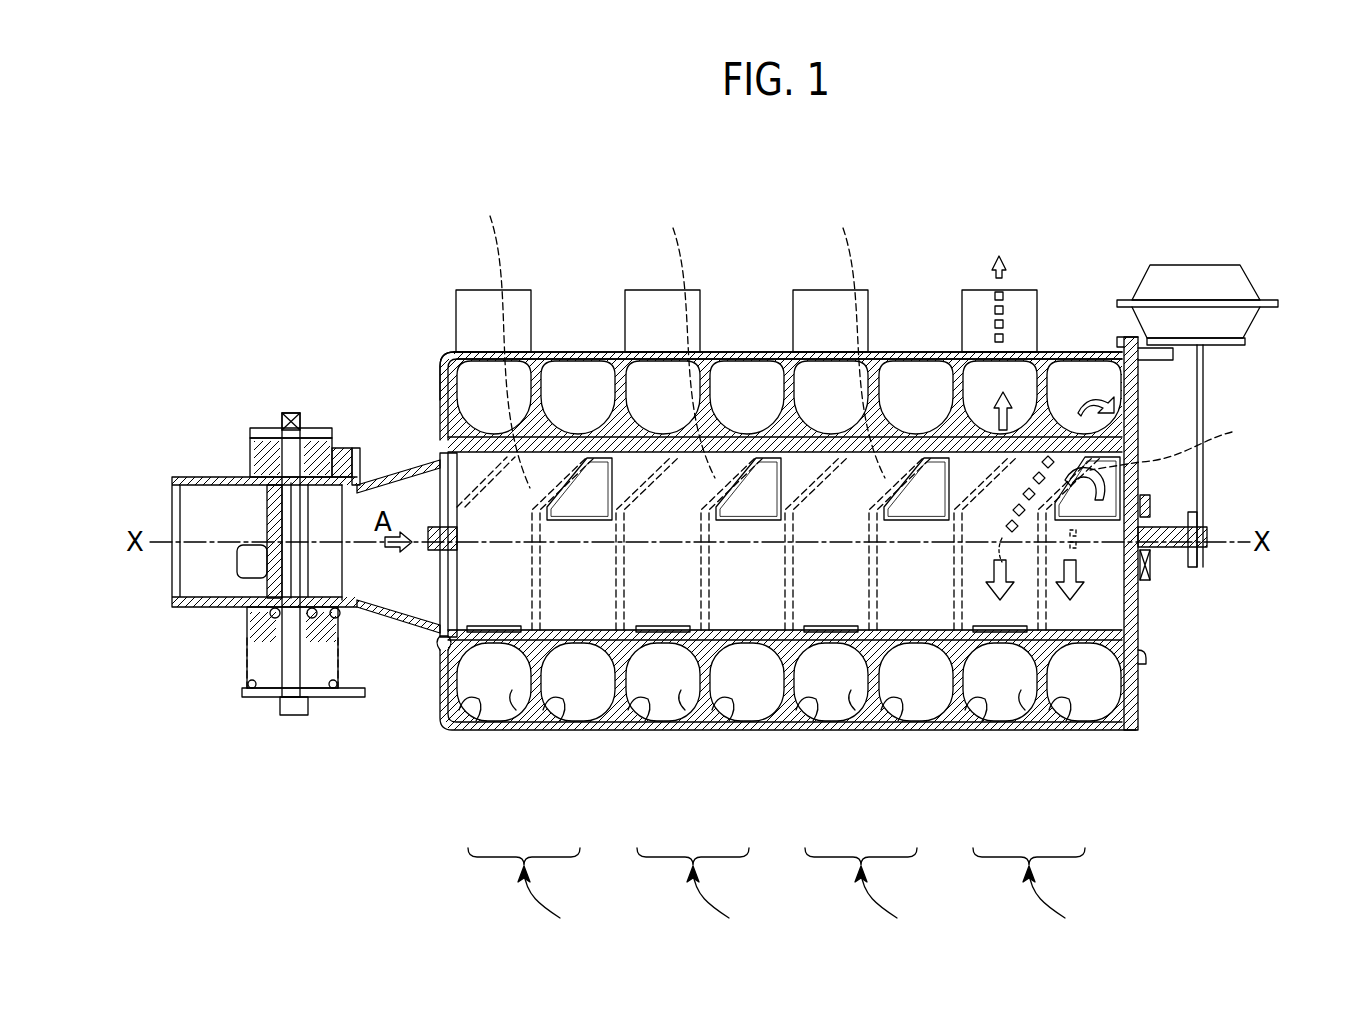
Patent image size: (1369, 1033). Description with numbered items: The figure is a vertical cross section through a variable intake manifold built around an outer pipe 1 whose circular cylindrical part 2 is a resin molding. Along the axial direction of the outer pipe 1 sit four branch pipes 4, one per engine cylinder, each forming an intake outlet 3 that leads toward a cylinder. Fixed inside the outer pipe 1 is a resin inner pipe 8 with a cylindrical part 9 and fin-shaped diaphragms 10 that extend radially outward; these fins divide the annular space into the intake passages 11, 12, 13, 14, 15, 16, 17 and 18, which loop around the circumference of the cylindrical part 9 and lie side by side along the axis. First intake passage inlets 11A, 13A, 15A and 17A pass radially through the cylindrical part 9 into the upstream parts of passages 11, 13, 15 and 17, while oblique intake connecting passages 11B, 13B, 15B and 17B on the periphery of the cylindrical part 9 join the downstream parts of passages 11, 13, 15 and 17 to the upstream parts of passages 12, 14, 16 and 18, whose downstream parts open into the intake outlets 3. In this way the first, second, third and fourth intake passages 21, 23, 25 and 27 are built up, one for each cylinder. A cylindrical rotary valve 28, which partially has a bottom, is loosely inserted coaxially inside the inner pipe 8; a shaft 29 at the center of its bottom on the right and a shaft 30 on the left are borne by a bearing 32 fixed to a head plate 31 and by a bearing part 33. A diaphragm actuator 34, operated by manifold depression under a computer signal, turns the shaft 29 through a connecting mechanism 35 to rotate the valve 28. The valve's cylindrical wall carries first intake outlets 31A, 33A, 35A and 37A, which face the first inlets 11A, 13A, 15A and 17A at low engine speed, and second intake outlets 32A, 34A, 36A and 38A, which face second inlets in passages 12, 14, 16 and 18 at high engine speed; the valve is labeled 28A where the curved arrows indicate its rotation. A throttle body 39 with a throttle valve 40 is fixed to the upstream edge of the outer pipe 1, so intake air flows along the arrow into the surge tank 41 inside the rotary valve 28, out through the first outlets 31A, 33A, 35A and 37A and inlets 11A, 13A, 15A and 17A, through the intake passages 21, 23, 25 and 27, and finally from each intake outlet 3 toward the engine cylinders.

The outer pipe 1 is at (437, 358).
The circular cylindrical part 2 is at (541, 352).
The intake outlet 3 is at (466, 290).
The branch pipe 4 is at (454, 314).
The inner pipe 8 is at (442, 660).
The cylindrical part 9 is at (1125, 640).
The fin-shaped diaphragm 10 is at (478, 716).
The intake passage 11 is at (1072, 645).
The intake passage 12 is at (1010, 645).
The intake passage 13 is at (902, 645).
The intake passage 14 is at (840, 645).
The intake passage 15 is at (734, 645).
The intake passage 16 is at (673, 645).
The intake passage 17 is at (565, 645).
The intake passage 18 is at (503, 645).
The first intake passage inlet 11A is at (1197, 483).
The intake connecting passage 11B is at (1186, 440).
The first intake passage inlet 13A is at (918, 350).
The intake connecting passage 13B is at (849, 338).
The first intake passage inlet 15A is at (750, 350).
The intake connecting passage 15B is at (679, 338).
The first intake passage inlet 17A is at (580, 350).
The intake connecting passage 17B is at (496, 336).
The first intake passage 21 is at (1034, 893).
The second intake passage 23 is at (866, 893).
The third intake passage 25 is at (698, 893).
The fourth intake passage 27 is at (529, 893).
The rotary valve 28 is at (1073, 627).
The control valve 28A is at (917, 632).
The shaft 29 is at (1170, 512).
The shaft 30 is at (440, 555).
The head plate 31 is at (1140, 660).
The first intake outlet 31A is at (1103, 488).
The bearing 32 is at (1150, 565).
The second intake outlet 32A is at (1016, 722).
The bearing part 33 is at (445, 495).
The first intake outlet 33A is at (935, 482).
The diaphragm actuator 34 is at (1190, 300).
The second intake outlet 34A is at (847, 722).
The connecting mechanism 35 is at (1205, 380).
The first intake outlet 35A is at (767, 482).
The second intake outlet 36A is at (679, 722).
The first intake outlet 37A is at (598, 482).
The second intake outlet 38A is at (510, 722).
The throttle body 39 is at (213, 478).
The throttle valve 40 is at (284, 522).
The surge tank 41 is at (643, 576).